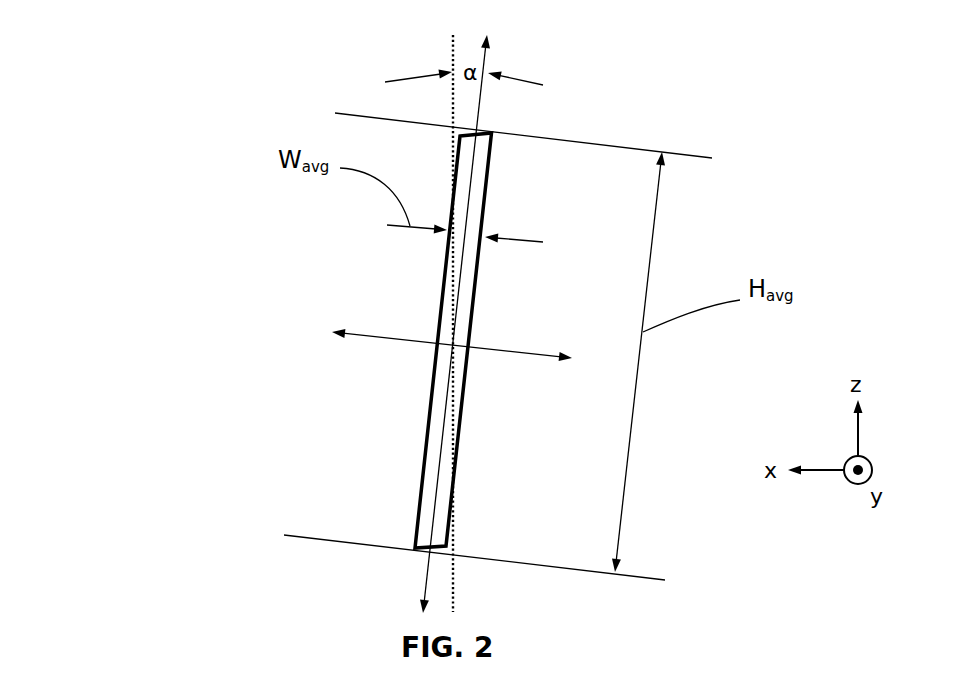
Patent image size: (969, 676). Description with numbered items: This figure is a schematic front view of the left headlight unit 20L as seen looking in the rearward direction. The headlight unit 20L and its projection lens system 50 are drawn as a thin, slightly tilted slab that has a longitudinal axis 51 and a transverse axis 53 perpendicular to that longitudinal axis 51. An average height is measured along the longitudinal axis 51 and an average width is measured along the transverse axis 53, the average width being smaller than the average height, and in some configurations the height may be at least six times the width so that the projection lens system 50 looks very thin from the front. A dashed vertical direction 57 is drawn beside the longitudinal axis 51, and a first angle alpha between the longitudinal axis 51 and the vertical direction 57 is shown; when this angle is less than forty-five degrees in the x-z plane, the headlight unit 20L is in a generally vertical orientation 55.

The left headlight unit 20L is at (263, 330).
The projection lens system 50 is at (263, 330).
The generally vertical orientation 55 is at (182, 200).
The longitudinal axis 51 is at (483, 112).
The transverse axis 53 is at (407, 338).
The vertical direction 57 is at (452, 52).